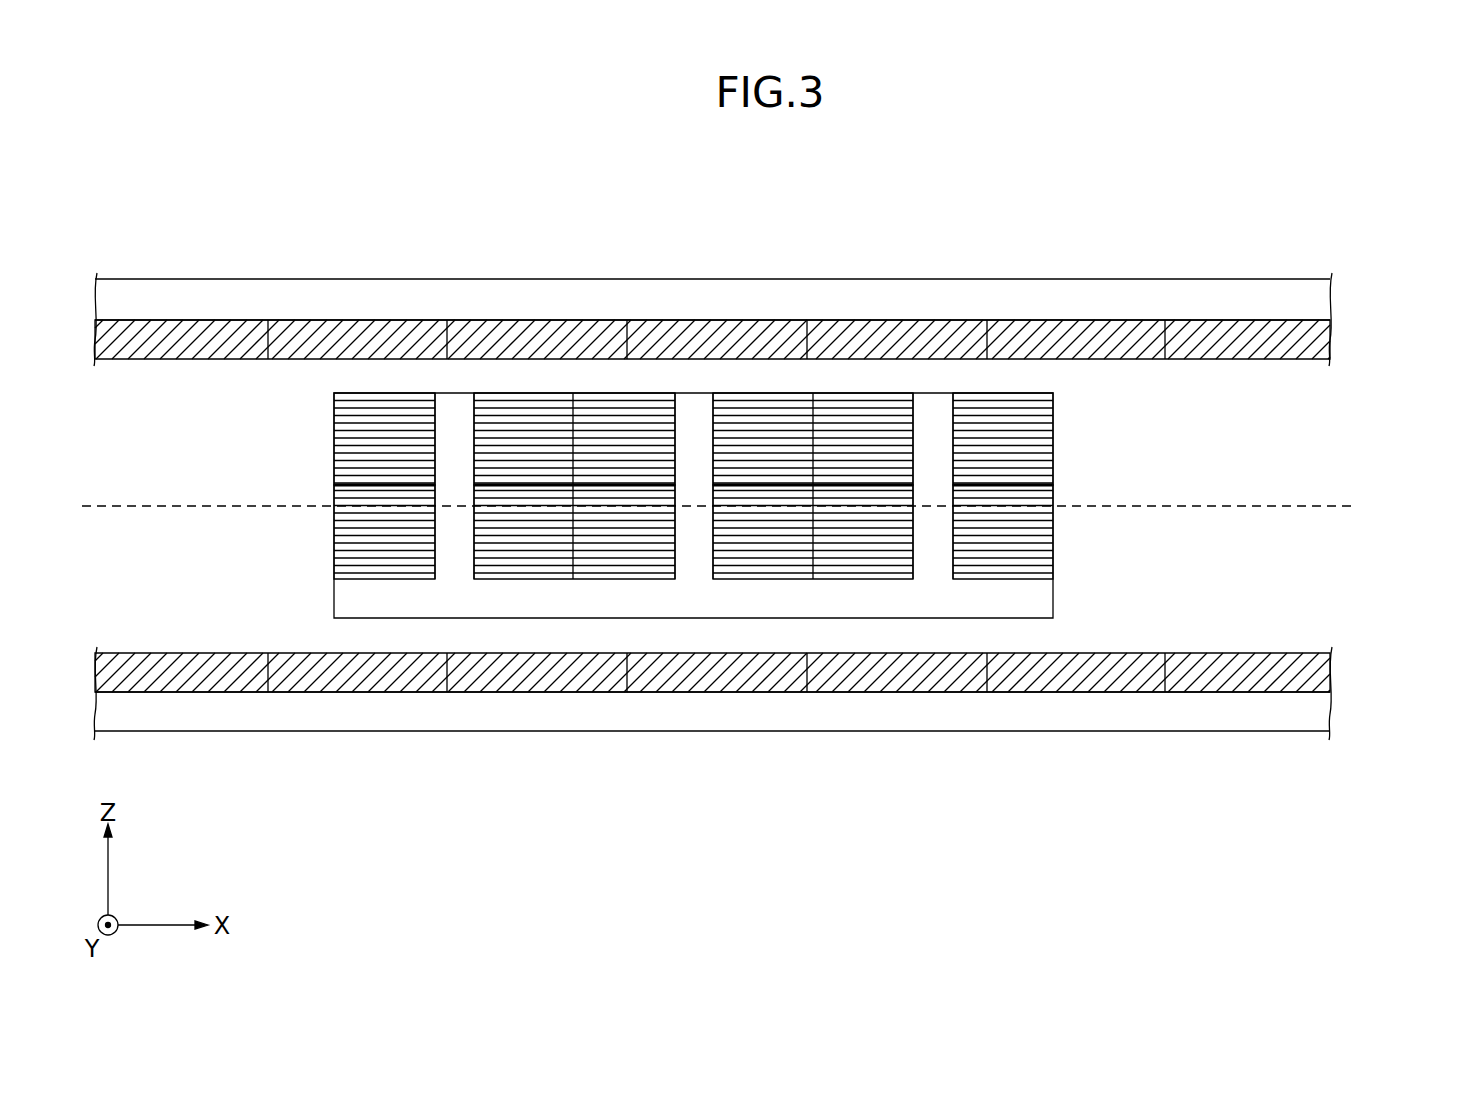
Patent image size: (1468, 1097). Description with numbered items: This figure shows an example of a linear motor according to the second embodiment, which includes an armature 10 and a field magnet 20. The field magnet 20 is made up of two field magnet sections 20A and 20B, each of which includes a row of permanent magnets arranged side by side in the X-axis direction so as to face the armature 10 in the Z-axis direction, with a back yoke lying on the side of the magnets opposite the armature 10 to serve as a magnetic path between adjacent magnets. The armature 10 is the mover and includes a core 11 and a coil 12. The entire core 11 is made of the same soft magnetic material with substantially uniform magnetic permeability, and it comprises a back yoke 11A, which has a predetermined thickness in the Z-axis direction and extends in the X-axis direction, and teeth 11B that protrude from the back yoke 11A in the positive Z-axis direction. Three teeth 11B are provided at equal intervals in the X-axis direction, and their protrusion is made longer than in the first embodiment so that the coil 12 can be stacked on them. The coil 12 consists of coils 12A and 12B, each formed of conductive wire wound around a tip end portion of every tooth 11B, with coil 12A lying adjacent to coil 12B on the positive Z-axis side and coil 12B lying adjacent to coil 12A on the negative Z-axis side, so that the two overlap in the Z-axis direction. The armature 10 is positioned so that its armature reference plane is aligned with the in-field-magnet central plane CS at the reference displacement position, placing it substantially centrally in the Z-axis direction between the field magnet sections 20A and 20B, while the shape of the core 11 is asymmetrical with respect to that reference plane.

The armature 10 is at (759, 383).
The core 11 is at (693, 383).
The back yoke 11A is at (358, 598).
The teeth 11B is at (447, 447).
The coil 12 is at (693, 363).
The coil 12A is at (504, 412).
The coil 12B is at (558, 543).
The field magnet 20 is at (775, 501).
The field magnet section 20A is at (749, 335).
The field magnet section 20B is at (749, 673).
The in-field-magnet central plane CS is at (119, 504).